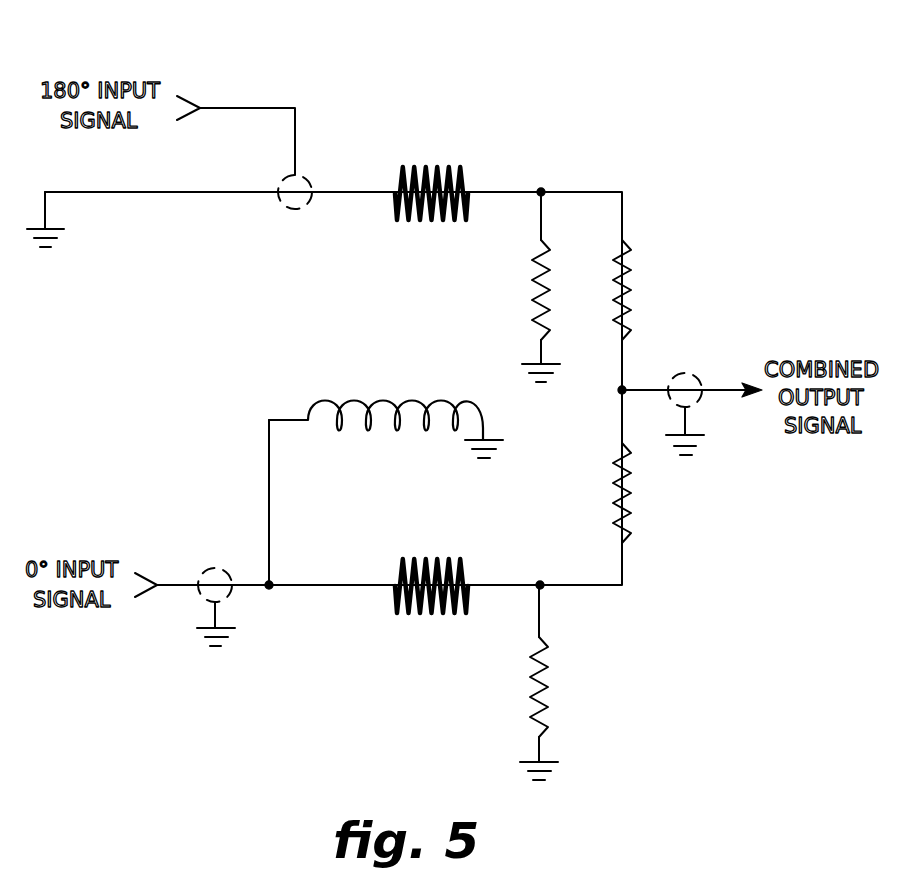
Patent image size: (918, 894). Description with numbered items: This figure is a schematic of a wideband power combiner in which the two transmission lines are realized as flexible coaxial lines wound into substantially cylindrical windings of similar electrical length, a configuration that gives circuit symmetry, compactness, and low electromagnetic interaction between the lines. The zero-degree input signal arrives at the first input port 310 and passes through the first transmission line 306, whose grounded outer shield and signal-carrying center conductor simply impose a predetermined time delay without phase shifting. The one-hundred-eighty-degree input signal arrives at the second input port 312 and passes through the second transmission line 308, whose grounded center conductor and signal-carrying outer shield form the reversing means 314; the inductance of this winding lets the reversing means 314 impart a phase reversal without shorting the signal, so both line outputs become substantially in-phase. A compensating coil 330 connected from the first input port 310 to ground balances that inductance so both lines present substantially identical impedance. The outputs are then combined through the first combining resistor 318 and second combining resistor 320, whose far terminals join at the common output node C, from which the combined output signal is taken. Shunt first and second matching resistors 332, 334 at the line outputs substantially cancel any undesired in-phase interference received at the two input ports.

The first transmission line 306 is at (418, 560).
The second transmission line 308 is at (428, 167).
The first input port 310 is at (172, 585).
The second input port 312 is at (247, 108).
The reversing means 314 is at (278, 200).
The first combining resistor 318 is at (628, 495).
The second combining resistor 320 is at (628, 270).
The compensating coil 330 is at (368, 402).
The first matching resistor 332 is at (540, 665).
The second matching resistor 334 is at (535, 280).
The combined output node C is at (622, 390).